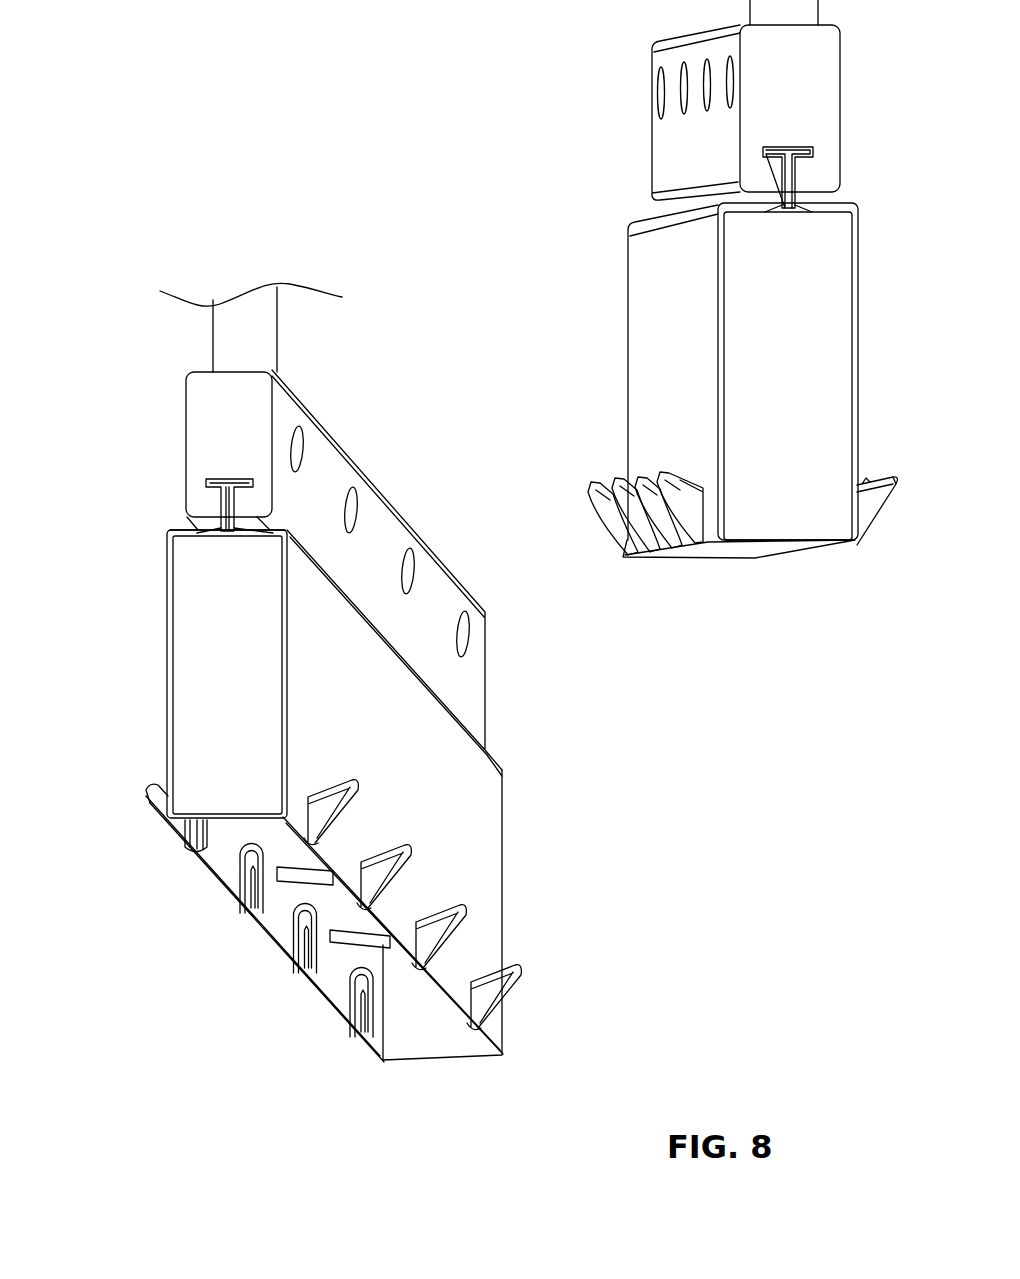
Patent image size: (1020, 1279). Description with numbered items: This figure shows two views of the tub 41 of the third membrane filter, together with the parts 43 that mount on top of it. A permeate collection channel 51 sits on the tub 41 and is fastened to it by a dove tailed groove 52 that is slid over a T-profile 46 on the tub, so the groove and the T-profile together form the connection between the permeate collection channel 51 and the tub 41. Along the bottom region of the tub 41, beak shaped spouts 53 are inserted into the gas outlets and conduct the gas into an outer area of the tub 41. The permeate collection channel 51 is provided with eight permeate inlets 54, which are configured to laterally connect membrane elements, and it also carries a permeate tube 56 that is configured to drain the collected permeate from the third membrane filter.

The tub 41 is at (500, 639).
The cable tray channel 43 is at (612, 284).
The T-profile 46 is at (205, 498).
The permeate collection channel 51 is at (329, 461).
The dove tailed groove 52 is at (223, 478).
The beak shaped spouts 53 is at (440, 928).
The permeate inlets 54 is at (410, 569).
The permeate tube 56 is at (233, 339).